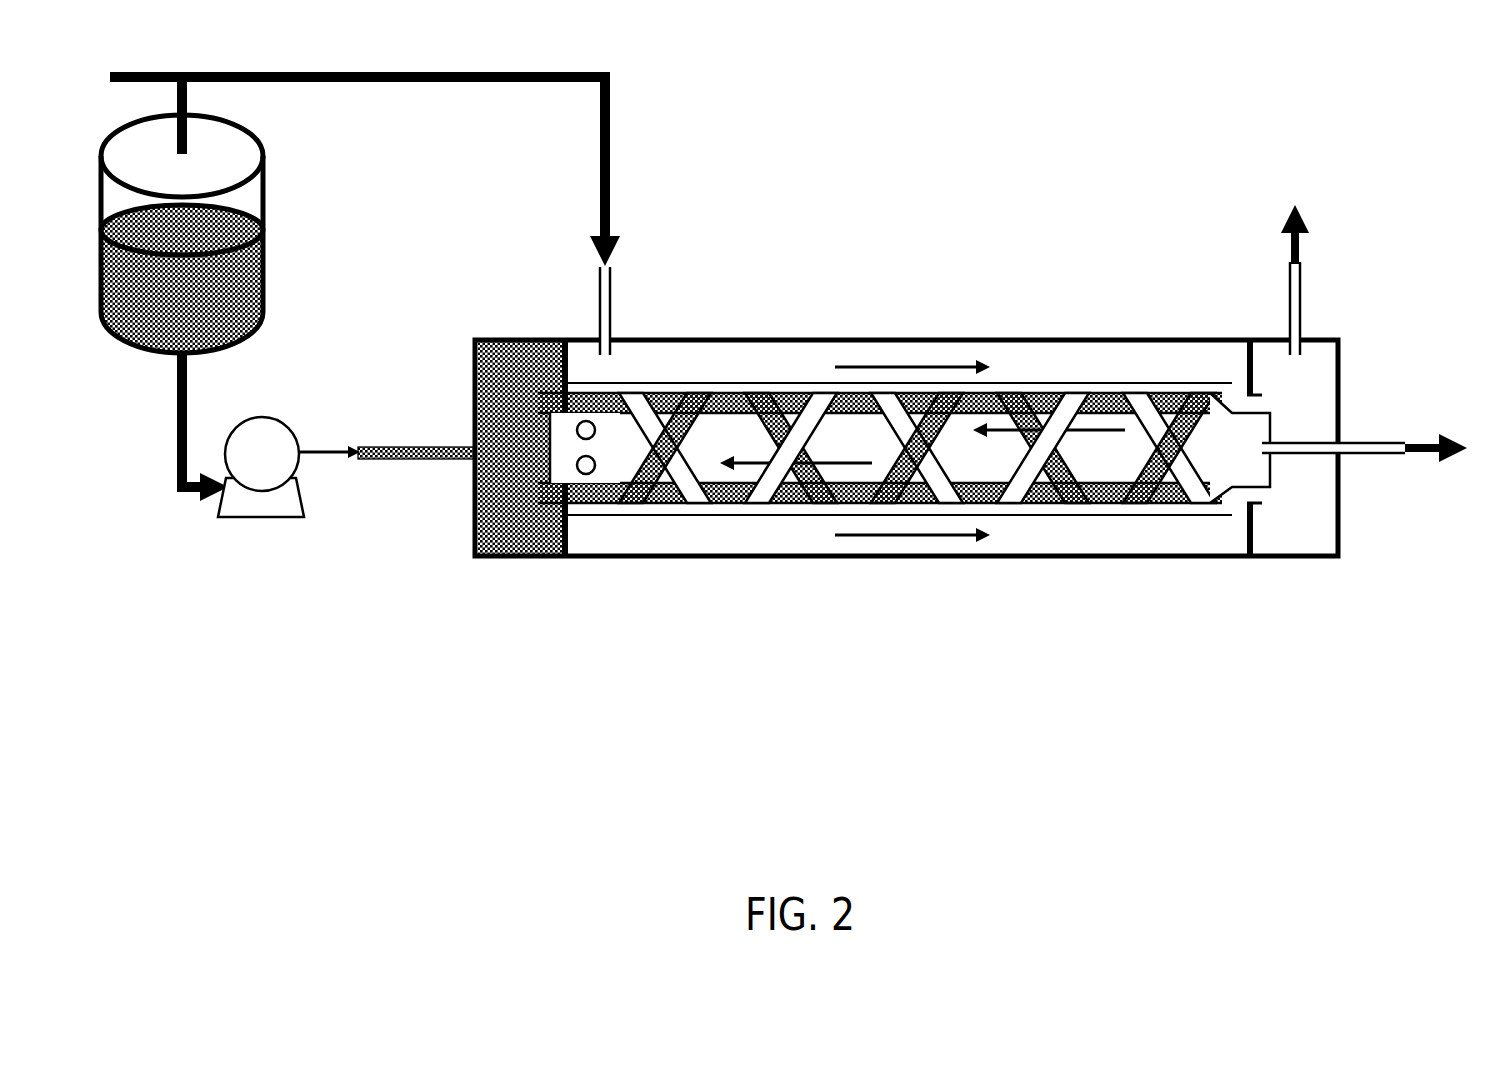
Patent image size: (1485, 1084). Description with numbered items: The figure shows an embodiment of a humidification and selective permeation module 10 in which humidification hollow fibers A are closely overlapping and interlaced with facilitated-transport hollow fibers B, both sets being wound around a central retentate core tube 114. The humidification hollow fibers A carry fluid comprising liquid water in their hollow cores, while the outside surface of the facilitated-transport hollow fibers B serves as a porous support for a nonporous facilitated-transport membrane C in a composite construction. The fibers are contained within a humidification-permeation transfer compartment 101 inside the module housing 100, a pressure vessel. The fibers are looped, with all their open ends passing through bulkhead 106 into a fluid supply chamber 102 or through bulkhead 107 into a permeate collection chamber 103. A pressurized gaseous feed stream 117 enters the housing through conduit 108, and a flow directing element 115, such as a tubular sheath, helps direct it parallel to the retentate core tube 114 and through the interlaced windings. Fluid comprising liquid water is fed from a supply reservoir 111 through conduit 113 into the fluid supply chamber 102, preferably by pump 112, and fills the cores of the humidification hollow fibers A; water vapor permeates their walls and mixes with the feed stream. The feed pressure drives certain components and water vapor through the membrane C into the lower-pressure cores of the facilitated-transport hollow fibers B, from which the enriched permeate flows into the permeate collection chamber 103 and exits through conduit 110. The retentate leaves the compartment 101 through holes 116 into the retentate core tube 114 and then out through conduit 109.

The humidification and selective permeation module 10 is at (1170, 276).
The module housing 100 is at (905, 340).
The humidification-permeation transfer compartment 101 is at (784, 376).
The fluid supply chamber 102 is at (517, 377).
The permeate collection chamber 103 is at (1324, 518).
The bulkhead 106 is at (566, 545).
The bulkhead 107 is at (1245, 360).
The conduit 108 is at (613, 297).
The conduit 109 is at (1372, 440).
The conduit 110 is at (1293, 300).
The supply reservoir 111 is at (266, 230).
The pump 112 is at (262, 518).
The conduit 113 is at (432, 459).
The retentate core tube 114 is at (982, 455).
The flow directing element 115 is at (1110, 517).
The holes 116 is at (588, 474).
The gaseous feed stream 117 is at (340, 83).
The humidification hollow fibers A is at (1030, 395).
The facilitated-transport hollow fibers B is at (710, 485).
The nonporous facilitated-transport membrane C is at (780, 485).